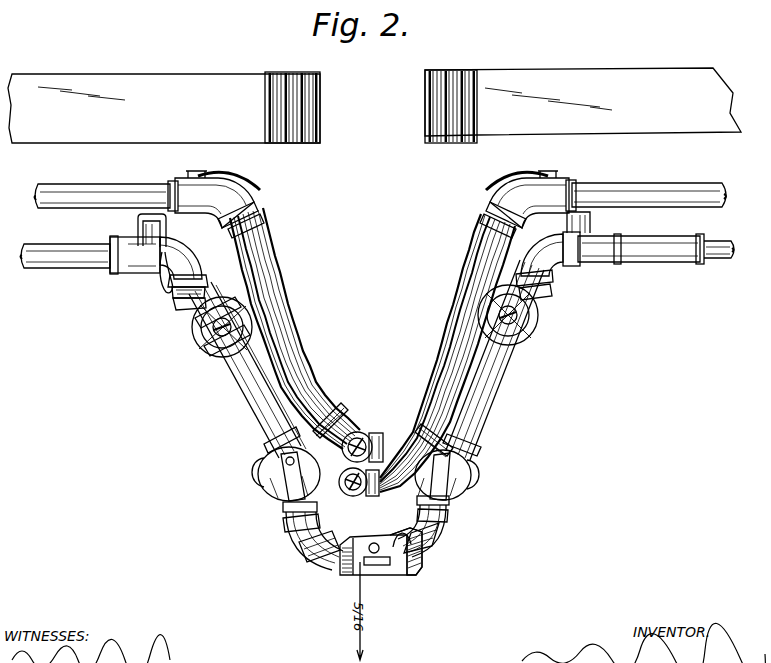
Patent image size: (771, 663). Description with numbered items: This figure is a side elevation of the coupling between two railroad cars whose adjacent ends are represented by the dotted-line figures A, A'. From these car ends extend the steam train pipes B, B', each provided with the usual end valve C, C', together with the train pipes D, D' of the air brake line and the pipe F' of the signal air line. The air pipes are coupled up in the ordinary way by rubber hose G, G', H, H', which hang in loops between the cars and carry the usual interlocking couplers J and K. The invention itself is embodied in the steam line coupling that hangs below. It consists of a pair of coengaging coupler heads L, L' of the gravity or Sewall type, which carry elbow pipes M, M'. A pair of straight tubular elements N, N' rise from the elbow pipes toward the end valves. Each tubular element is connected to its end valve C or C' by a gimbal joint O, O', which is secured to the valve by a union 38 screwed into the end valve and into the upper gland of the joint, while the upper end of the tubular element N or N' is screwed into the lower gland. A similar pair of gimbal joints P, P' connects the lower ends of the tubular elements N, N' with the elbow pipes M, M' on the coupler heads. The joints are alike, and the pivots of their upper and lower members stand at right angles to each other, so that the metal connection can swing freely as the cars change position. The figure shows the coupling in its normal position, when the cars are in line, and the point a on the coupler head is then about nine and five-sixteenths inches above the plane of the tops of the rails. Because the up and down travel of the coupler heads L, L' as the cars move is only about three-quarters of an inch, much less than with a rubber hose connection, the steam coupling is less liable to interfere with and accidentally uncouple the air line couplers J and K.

The car end A is at (180, 107).
The car end A' is at (583, 89).
The air brake train pipe D is at (150, 193).
The air brake train pipe D' is at (603, 191).
The steam train pipe B is at (66, 285).
The steam train pipe B' is at (641, 280).
The signal air line pipe F' is at (723, 233).
The end valve C is at (156, 271).
The end valve C' is at (578, 274).
The union 38 is at (195, 300).
The gimbal joint O is at (200, 338).
The gimbal joint O' is at (540, 323).
The rubber hose G is at (295, 328).
The rubber hose G' is at (447, 353).
The rubber hose H is at (327, 404).
The rubber hose H' is at (418, 408).
The interlocking coupler J is at (362, 432).
The interlocking coupler K is at (356, 497).
The tubular element N is at (245, 370).
The tubular element N' is at (493, 360).
The gimbal joint P is at (259, 489).
The gimbal joint P' is at (475, 477).
The elbow pipe M is at (279, 543).
The elbow pipe M' is at (455, 531).
The coupler head L is at (364, 572).
The coupler head L' is at (406, 572).
The point on coupler a is at (377, 566).